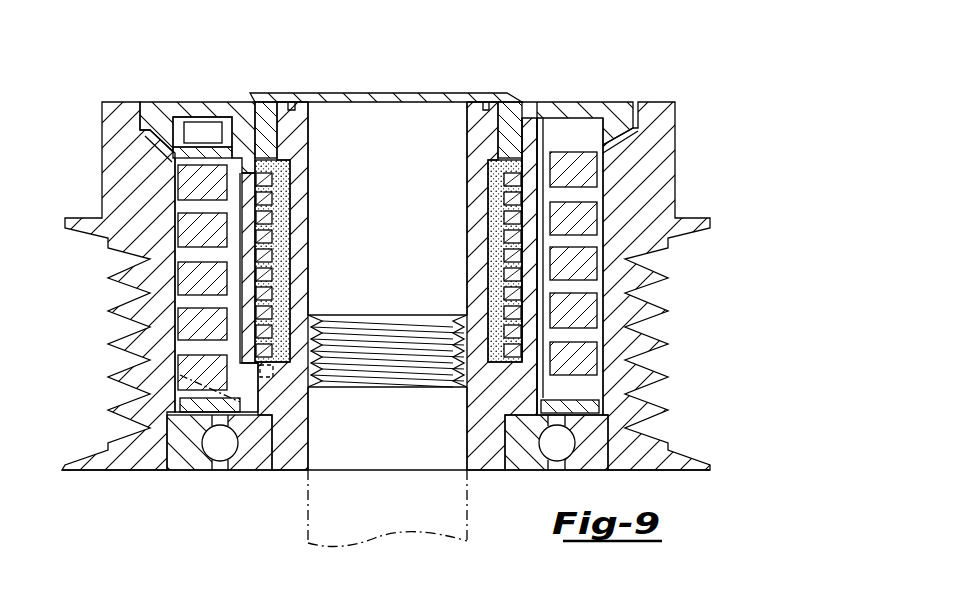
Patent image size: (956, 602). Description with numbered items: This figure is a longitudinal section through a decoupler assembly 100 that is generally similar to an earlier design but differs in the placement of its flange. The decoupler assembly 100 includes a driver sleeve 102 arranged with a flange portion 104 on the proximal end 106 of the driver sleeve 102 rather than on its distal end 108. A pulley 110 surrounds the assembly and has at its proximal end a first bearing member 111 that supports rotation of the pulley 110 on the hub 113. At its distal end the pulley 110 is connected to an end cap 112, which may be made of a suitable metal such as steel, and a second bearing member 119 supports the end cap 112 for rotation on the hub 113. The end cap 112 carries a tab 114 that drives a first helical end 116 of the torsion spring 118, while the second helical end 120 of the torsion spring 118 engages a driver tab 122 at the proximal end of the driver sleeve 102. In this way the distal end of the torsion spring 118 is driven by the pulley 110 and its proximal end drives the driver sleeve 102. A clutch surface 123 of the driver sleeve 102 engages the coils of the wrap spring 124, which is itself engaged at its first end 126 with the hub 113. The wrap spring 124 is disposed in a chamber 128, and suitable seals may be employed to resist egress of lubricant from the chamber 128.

The decoupler assembly 100 is at (612, 64).
The driver sleeve 102 is at (530, 217).
The flange portion 104 is at (590, 403).
The proximal end 106 is at (532, 405).
The distal end 108 is at (530, 183).
The pulley 110 is at (660, 143).
The first bearing member 111 is at (595, 460).
The end cap 112 is at (241, 107).
The hub 113 is at (300, 120).
The tab 114 is at (203, 125).
The first helical end 116 is at (186, 153).
The torsion spring 118 is at (185, 183).
The second bearing member 119 is at (512, 108).
The second helical end 120 is at (180, 360).
The driver tab 122 is at (178, 392).
The clutch surface 123 is at (256, 218).
The wrap spring 124 is at (258, 296).
The first end 126 is at (268, 372).
The chamber 128 is at (277, 270).